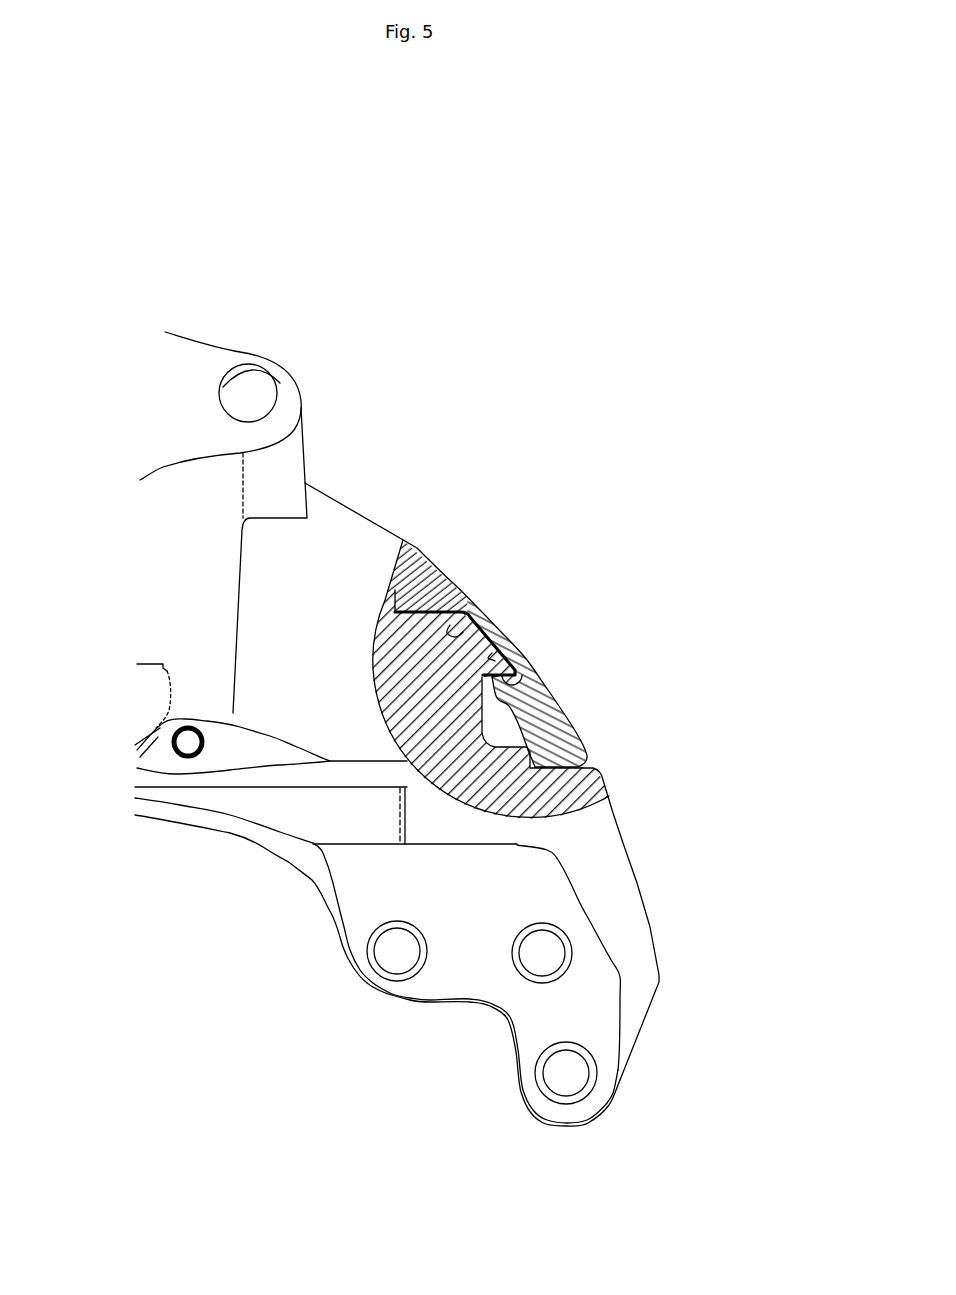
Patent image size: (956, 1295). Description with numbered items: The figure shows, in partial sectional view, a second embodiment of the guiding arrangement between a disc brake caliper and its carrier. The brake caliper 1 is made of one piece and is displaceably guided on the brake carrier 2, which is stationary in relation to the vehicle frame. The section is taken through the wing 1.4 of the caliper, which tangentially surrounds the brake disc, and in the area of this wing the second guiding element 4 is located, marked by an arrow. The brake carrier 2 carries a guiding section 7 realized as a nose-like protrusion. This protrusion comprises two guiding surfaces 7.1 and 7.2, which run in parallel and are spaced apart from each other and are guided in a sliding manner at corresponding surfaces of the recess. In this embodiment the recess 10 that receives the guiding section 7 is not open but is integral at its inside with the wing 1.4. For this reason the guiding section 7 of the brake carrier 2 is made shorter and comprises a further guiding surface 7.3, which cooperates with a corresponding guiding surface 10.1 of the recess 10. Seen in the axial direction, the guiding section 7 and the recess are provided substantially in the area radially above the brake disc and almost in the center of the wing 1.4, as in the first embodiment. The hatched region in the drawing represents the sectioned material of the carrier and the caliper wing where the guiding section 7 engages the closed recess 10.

The brake caliper 1 is at (203, 367).
The wing 1.4 is at (567, 731).
The brake carrier 2 is at (590, 1093).
The second guiding element 4 is at (514, 432).
The guiding section 7 is at (470, 645).
The guiding surface 7.1 is at (452, 612).
The guiding surface 7.2 is at (515, 680).
The further guiding surface 7.3 is at (505, 680).
The recess 10 is at (450, 625).
The guiding surface 10.1 is at (492, 653).